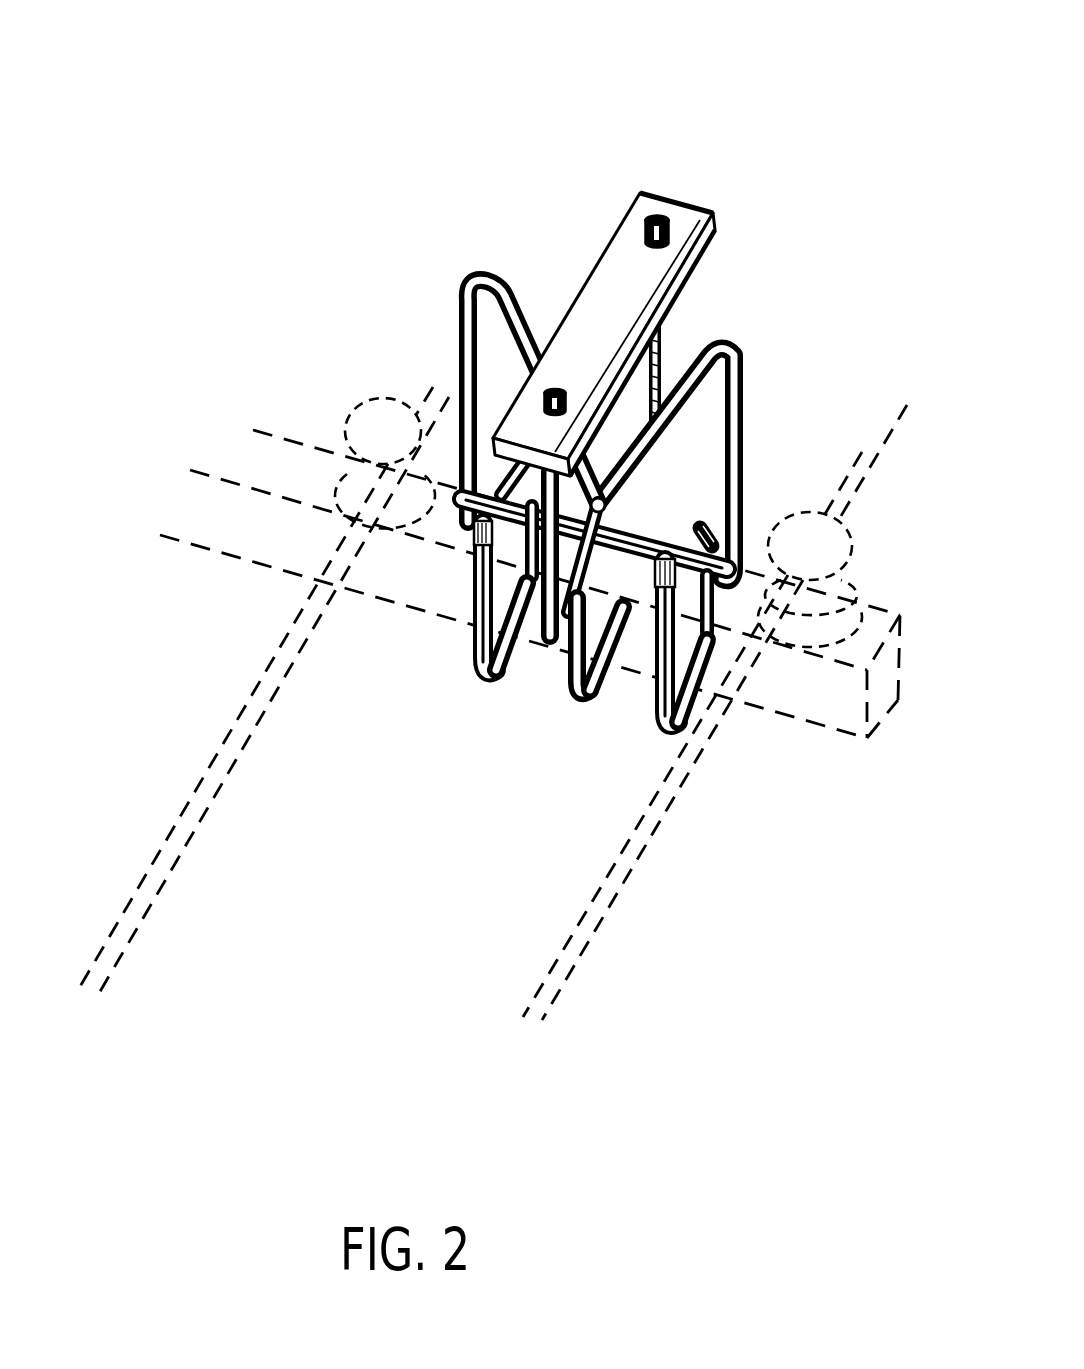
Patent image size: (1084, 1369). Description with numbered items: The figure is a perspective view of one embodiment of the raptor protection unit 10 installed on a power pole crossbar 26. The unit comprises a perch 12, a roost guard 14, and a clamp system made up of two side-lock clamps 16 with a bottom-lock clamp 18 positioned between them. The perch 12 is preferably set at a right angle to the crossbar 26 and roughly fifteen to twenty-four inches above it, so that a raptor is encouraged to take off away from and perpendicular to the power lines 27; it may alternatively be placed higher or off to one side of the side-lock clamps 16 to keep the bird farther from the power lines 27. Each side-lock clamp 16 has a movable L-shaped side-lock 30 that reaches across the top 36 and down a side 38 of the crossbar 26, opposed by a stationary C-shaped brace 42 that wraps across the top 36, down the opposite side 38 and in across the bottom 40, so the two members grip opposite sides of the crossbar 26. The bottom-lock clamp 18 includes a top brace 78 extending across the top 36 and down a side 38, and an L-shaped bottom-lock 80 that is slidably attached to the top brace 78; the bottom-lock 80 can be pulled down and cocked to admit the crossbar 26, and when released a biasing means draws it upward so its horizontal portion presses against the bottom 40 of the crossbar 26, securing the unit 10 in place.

The raptor protection unit 10 is at (620, 392).
The perch 12 is at (630, 321).
The roost guard 14 is at (752, 420).
The side-lock clamp 16 is at (474, 676).
The bottom-lock clamp 18 is at (567, 694).
The crossbar 26 is at (300, 438).
The power lines 27 is at (247, 738).
The L-shaped side-lock 30 is at (611, 381).
The top 36 is at (238, 467).
The side 38 is at (220, 530).
The bottom 40 is at (888, 706).
The C-shaped brace 42 is at (466, 612).
The top brace 78 is at (597, 585).
The L-shaped bottom-lock 80 is at (590, 672).